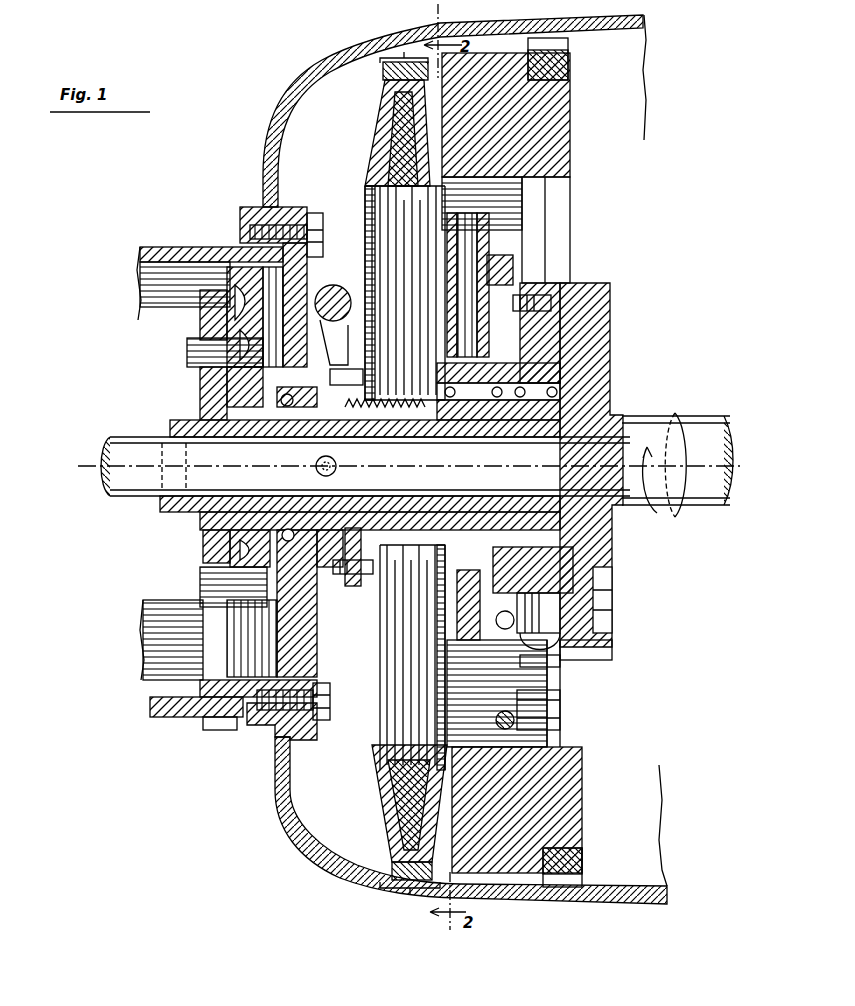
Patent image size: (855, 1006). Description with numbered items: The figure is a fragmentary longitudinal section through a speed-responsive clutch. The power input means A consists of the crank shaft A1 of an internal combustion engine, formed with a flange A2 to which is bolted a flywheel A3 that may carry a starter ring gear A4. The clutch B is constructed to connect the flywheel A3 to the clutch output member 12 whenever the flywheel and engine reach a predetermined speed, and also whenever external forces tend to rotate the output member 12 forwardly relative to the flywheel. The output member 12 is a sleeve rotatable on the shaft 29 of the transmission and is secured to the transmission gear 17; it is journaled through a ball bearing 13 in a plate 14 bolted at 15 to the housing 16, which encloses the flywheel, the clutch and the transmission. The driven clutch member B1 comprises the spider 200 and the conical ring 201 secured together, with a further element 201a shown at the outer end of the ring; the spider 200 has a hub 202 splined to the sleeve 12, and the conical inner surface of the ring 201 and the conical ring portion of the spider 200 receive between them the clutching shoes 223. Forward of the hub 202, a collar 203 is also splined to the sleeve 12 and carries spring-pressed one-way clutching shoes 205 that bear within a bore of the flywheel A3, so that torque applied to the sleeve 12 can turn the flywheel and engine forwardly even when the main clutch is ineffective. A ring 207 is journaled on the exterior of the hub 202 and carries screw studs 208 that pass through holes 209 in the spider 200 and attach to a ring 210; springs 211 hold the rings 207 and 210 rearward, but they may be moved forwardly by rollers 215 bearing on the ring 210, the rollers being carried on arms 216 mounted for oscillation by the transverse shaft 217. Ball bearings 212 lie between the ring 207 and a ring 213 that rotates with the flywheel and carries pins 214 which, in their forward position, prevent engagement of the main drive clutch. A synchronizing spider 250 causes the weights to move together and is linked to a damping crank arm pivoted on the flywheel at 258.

The housing 16 is at (300, 75).
The shaft 29 is at (112, 440).
The crank shaft A1 is at (640, 413).
The flange A2 is at (548, 287).
The flywheel A3 is at (550, 100).
The starter ring gear A4 is at (568, 60).
The power input means A is at (594, 787).
The clutch B is at (383, 850).
The driven clutch member B1 is at (407, 470).
The clutch output member 12 is at (460, 453).
The ball bearing 13 is at (273, 533).
The plate 14 is at (300, 725).
The bolt 15 is at (327, 700).
The transmission gear 17 is at (215, 416).
The spider 200 is at (400, 112).
The conical ring 201 is at (392, 130).
The retaining ring 201a is at (395, 82).
The hub 202 is at (380, 482).
The collar 203 is at (610, 388).
The clutching shoes 205 is at (500, 388).
The ring 207 is at (412, 575).
The screw studs 208 is at (240, 396).
The holes 209 is at (395, 560).
The ring 210 is at (350, 576).
The springs 211 is at (365, 455).
The ball bearings 212 is at (418, 482).
The ring 213 is at (425, 580).
The pins 214 is at (412, 453).
The rollers 215 is at (316, 462).
The arms 216 is at (230, 372).
The transverse shaft 217 is at (347, 268).
The clutching shoes 223 is at (400, 150).
The synchronizing spider 250 is at (517, 370).
The pivot 258 is at (533, 283).